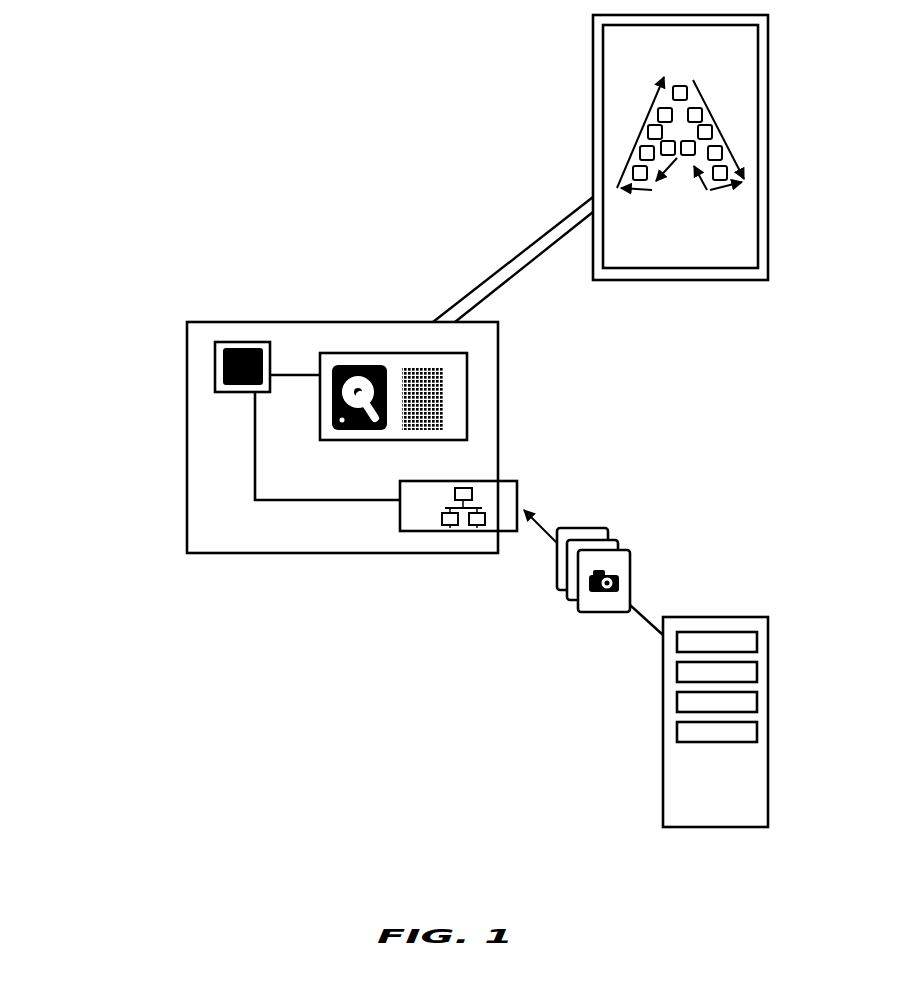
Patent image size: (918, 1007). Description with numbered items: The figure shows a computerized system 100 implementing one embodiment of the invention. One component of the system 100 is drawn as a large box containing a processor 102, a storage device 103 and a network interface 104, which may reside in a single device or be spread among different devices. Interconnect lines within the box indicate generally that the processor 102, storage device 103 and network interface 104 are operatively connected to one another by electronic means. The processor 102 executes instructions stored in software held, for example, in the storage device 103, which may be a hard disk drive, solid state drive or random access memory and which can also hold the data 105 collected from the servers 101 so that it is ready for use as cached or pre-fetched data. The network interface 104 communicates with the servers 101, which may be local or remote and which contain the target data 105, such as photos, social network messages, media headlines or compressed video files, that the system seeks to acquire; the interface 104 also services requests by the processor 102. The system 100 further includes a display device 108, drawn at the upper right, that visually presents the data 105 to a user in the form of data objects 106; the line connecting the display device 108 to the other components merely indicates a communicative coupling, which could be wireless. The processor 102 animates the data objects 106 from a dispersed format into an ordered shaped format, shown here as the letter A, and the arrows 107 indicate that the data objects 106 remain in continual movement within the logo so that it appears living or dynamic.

The computerized system 100 is at (173, 103).
The servers 101 is at (738, 606).
The processor 102 is at (215, 378).
The storage device 103 is at (320, 437).
The network interface 104 is at (400, 505).
The data 105 is at (557, 573).
The data objects 106 is at (677, 157).
The arrows 107 is at (723, 190).
The display device 108 is at (652, 60).